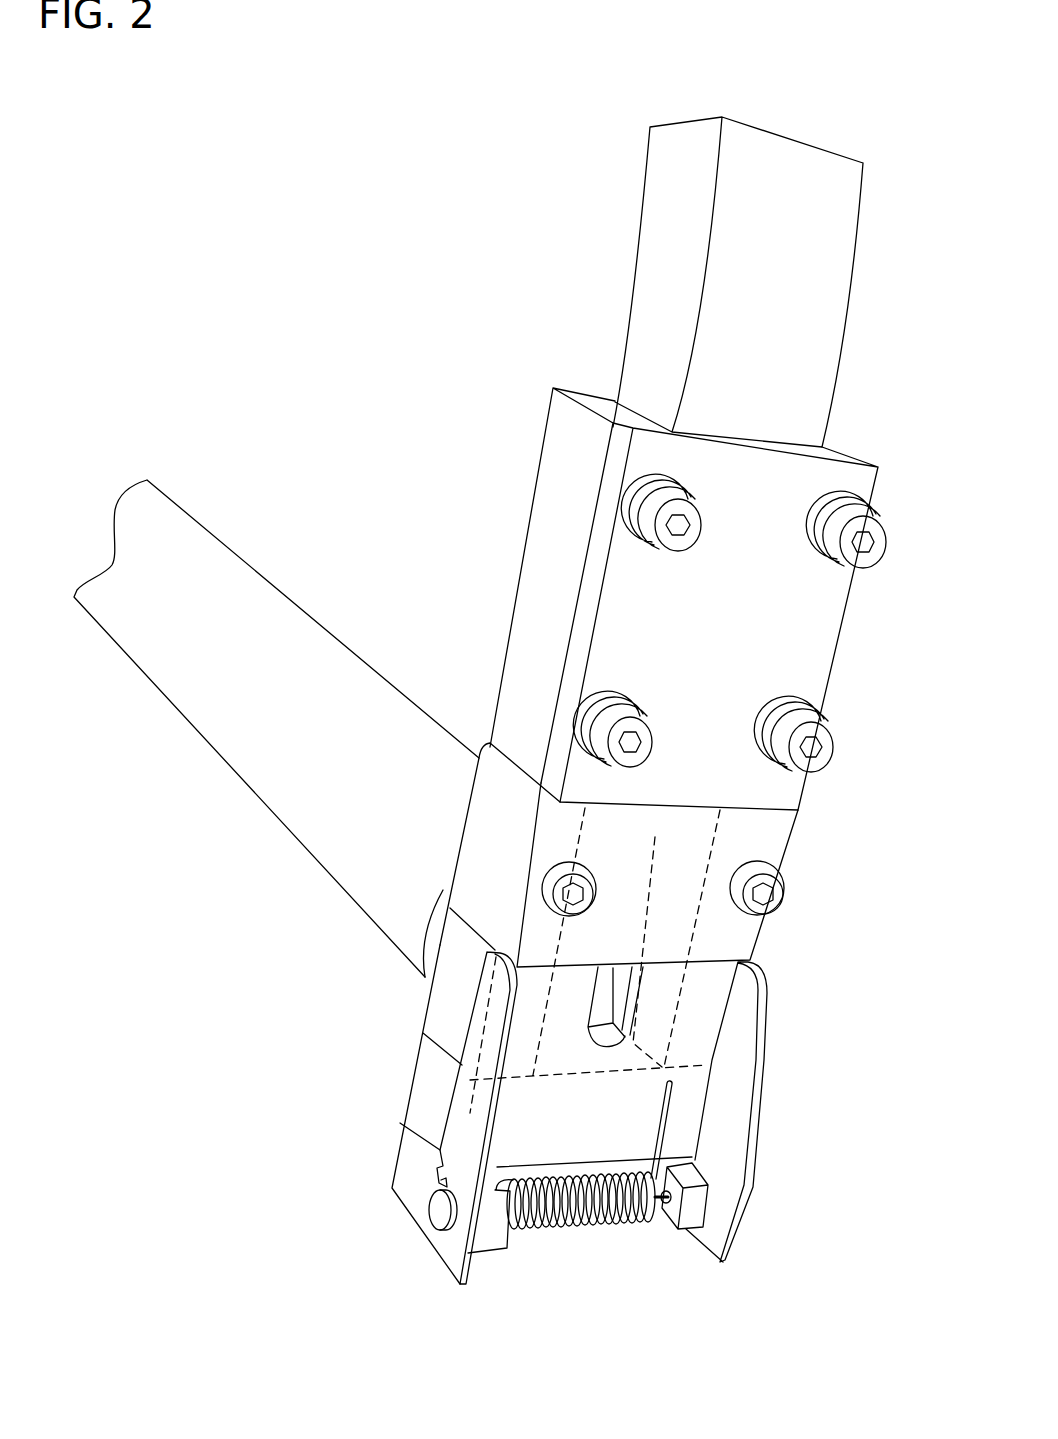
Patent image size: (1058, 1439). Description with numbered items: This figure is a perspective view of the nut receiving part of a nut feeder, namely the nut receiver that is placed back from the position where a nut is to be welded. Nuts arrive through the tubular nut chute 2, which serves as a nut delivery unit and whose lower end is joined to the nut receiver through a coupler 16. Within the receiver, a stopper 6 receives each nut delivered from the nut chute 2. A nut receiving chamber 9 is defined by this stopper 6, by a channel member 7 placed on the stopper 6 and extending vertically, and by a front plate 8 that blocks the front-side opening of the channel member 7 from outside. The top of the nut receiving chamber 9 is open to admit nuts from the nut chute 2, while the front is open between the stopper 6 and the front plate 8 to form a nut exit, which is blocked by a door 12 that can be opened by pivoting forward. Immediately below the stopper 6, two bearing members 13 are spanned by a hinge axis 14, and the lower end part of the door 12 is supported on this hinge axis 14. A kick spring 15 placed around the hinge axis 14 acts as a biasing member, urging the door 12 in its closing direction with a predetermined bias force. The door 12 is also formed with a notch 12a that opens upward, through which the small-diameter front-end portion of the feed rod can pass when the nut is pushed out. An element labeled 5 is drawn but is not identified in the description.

The nut chute 2 is at (643, 177).
The arm 5 is at (237, 553).
The coupler 16 is at (545, 543).
The channel member 7 is at (473, 848).
The front plate 8 is at (755, 837).
The notch 12a is at (598, 1003).
The nut receiving chamber 9 is at (607, 977).
The door 12 is at (698, 1018).
The stopper 6 is at (423, 1070).
The bearing members 13 is at (498, 1240).
The kick spring 15 is at (615, 1227).
The hinge axis 14 is at (663, 1203).